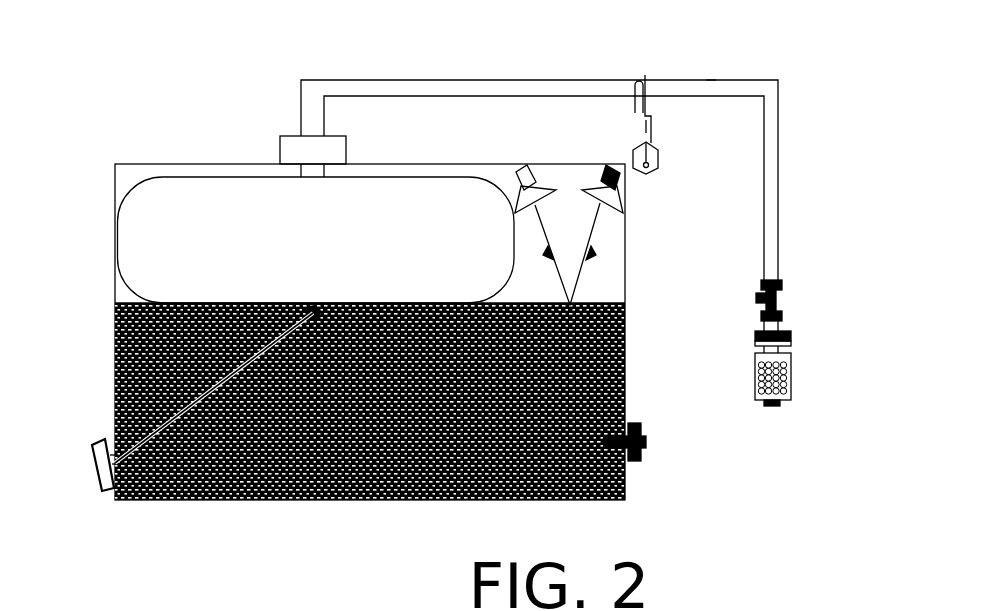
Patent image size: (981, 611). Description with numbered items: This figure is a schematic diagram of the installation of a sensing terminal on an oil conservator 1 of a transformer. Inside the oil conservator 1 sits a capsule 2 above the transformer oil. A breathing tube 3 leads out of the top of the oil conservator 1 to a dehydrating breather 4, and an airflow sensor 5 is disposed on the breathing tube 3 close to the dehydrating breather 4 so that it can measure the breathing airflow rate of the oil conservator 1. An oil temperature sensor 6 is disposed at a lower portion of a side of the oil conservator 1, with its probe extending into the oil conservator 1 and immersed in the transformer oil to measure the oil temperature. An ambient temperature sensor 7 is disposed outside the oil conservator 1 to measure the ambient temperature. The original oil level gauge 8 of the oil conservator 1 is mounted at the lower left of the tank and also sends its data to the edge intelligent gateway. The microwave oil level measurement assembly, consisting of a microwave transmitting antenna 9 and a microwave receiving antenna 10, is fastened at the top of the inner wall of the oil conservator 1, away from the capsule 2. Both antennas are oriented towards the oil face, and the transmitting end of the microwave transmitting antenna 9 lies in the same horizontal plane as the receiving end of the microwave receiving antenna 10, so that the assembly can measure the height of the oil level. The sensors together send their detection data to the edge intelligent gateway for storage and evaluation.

The oil conservator 1 is at (148, 155).
The capsule 2 is at (127, 257).
The breathing tube 3 is at (750, 72).
The dehydrating breather 4 is at (783, 353).
The airflow sensor 5 is at (772, 293).
The oil temperature sensor 6 is at (639, 427).
The ambient temperature sensor 7 is at (652, 146).
The oil level gauge 8 is at (86, 436).
The microwave transmitting antenna 9 is at (517, 165).
The microwave receiving antenna 10 is at (617, 188).